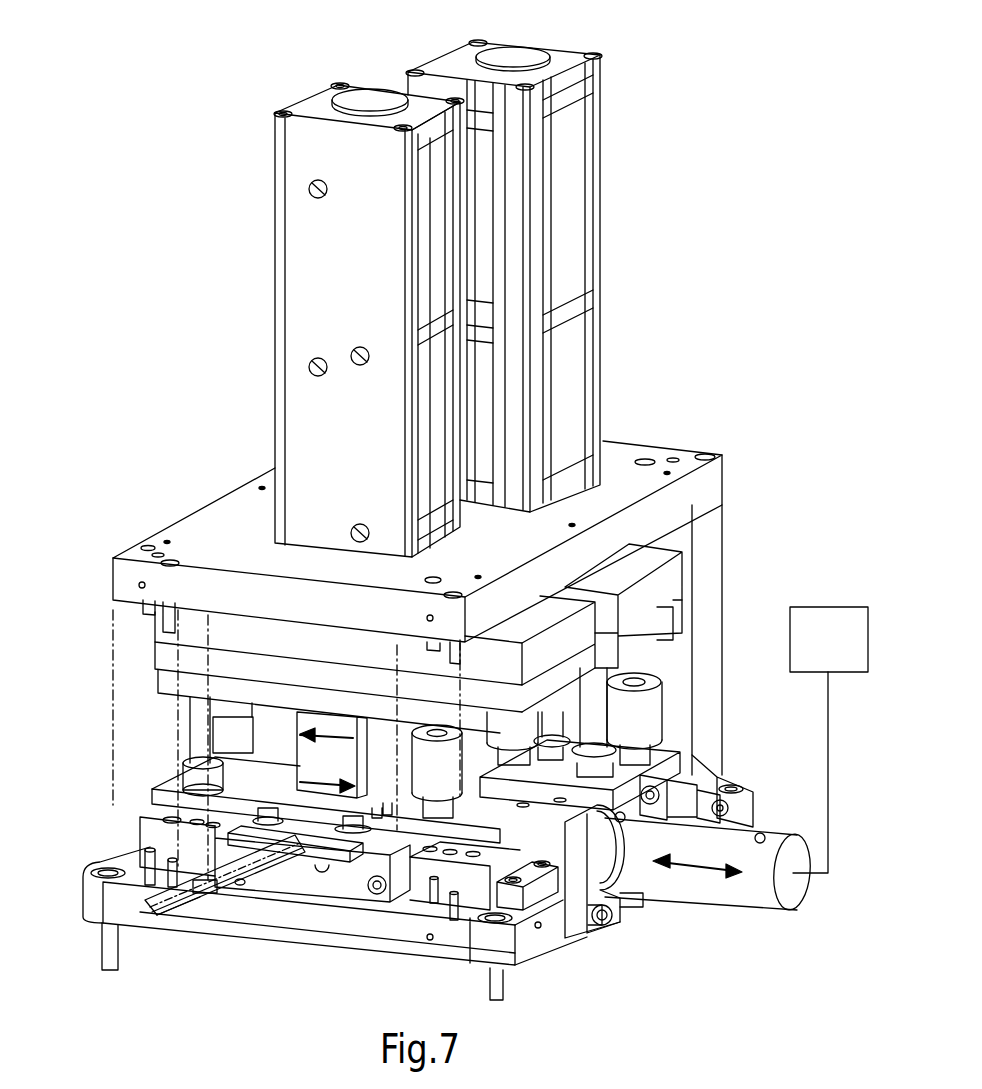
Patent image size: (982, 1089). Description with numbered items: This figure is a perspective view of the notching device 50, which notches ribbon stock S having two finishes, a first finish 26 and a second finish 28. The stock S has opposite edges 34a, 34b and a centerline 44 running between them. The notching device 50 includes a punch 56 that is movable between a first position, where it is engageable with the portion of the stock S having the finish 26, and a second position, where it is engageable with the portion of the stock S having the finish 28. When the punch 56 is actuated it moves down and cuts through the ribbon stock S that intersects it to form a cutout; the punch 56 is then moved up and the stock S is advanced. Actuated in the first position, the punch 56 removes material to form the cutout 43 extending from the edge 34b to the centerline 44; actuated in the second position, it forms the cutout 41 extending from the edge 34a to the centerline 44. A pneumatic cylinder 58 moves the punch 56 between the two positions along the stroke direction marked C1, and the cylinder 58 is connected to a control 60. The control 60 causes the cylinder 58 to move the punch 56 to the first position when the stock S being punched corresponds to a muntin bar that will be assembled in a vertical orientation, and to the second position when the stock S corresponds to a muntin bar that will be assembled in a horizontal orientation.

The notching device 50 is at (688, 192).
The punch 56 is at (310, 752).
The finish 28 is at (147, 887).
The edge 34a is at (147, 902).
The stock material S is at (153, 917).
The centerline 44 is at (160, 915).
The cutout 41 is at (212, 893).
The edge 34b is at (240, 885).
The finish 26 is at (252, 864).
The second cutout 43 is at (300, 857).
The pneumatic cylinder 58 is at (747, 845).
The stroke direction C1 is at (697, 859).
The control 60 is at (823, 607).